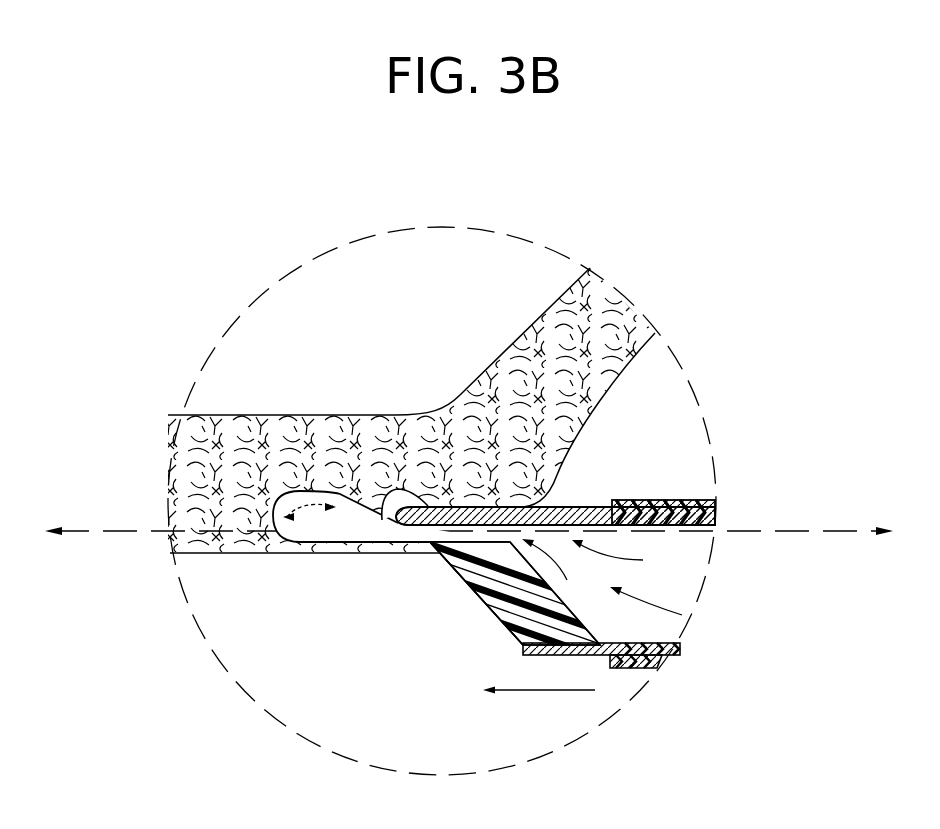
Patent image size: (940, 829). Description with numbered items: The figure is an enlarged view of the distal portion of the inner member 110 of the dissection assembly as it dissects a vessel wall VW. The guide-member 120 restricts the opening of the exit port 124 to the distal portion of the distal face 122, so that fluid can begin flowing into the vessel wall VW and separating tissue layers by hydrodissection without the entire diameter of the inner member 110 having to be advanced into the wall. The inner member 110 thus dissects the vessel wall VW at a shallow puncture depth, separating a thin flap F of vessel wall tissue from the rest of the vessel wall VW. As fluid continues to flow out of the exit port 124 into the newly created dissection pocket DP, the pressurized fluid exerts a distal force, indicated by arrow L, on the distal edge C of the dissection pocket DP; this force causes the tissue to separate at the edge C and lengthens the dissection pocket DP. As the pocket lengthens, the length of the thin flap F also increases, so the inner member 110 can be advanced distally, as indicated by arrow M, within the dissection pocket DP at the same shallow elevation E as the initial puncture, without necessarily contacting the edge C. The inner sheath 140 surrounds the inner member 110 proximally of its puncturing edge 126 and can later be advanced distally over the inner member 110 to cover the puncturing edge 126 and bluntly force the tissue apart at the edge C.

The inner member 110 is at (577, 510).
The guide-member 120 is at (495, 598).
The distal face 122 is at (448, 576).
The exit port 124 is at (352, 504).
The puncturing edge 126 is at (424, 498).
The inner sheath 140 is at (687, 500).
The vessel wall VW is at (506, 348).
The dissection pocket DP is at (354, 496).
The distal edge of the dissection pocket C is at (287, 495).
The arrow indicating distal force L is at (301, 522).
The thin flap F is at (360, 550).
The arrow indicating distal advancement M is at (539, 707).
The shallow elevation E is at (474, 516).